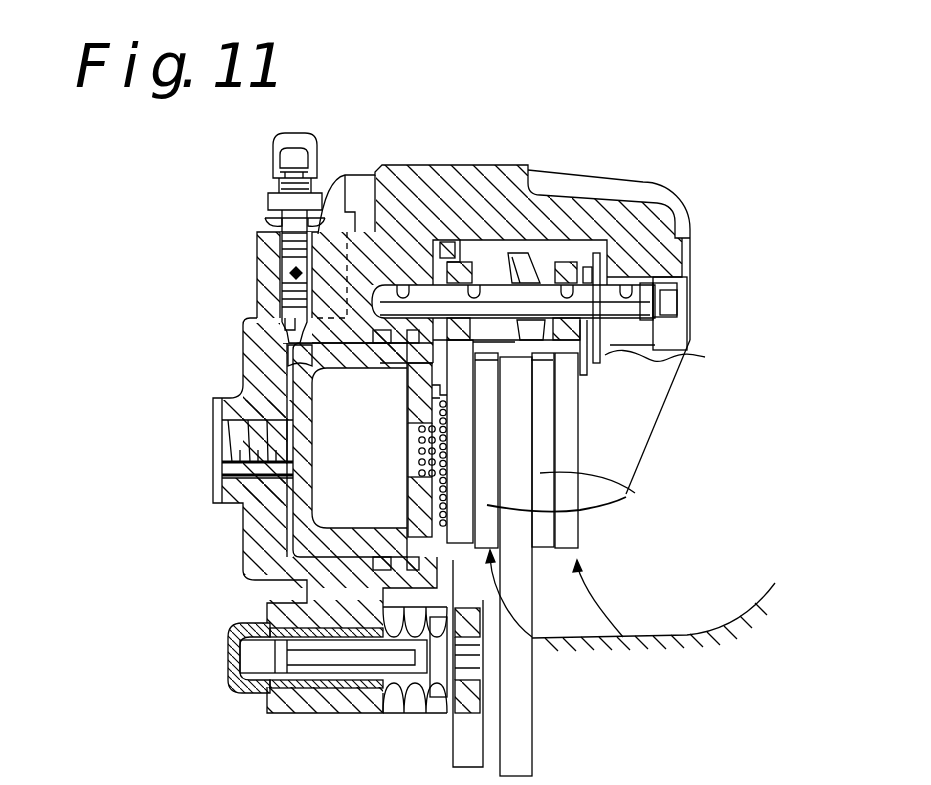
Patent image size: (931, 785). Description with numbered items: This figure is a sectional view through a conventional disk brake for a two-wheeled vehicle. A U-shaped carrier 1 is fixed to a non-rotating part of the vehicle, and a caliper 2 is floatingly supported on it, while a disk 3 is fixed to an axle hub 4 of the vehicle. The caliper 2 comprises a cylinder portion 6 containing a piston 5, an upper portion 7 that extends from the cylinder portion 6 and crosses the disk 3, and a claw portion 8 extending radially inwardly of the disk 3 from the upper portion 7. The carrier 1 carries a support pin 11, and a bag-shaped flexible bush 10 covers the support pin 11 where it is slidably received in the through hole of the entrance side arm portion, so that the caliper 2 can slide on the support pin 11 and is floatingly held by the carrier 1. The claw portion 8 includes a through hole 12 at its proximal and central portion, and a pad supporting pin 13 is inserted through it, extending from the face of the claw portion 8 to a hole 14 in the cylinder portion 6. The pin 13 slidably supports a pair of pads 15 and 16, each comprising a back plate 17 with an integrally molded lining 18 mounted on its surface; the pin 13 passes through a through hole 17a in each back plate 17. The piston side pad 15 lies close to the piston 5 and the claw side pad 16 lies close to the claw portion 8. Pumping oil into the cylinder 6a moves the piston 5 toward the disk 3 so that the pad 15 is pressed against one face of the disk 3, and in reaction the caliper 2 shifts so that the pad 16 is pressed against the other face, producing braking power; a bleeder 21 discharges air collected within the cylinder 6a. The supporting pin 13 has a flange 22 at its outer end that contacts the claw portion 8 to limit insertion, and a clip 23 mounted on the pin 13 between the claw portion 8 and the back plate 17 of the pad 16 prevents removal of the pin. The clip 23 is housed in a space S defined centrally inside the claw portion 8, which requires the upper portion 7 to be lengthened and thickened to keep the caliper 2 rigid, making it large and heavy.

The carrier 1 is at (465, 753).
The caliper 2 is at (250, 250).
The disk 3 is at (513, 760).
The axle hub 4 is at (737, 607).
The piston 5 is at (305, 528).
The cylinder portion 6 is at (257, 367).
The cylinder 6a is at (263, 305).
The upper portion 7 is at (447, 190).
The claw portion 8 is at (618, 428).
The bush 10 is at (238, 687).
The support pin 11 is at (325, 710).
The through hole 12 is at (622, 290).
The pad supporting pin 13 is at (535, 293).
The hole 14 is at (403, 285).
The piston side pad 15 is at (533, 640).
The claw side pad 16 is at (623, 640).
The back plate 17 is at (440, 392).
The through hole 17a is at (485, 284).
The lining 18 is at (626, 497).
The bleeder 21 is at (273, 158).
The flange 22 is at (688, 285).
The clip 23 is at (675, 347).
The space S is at (626, 290).